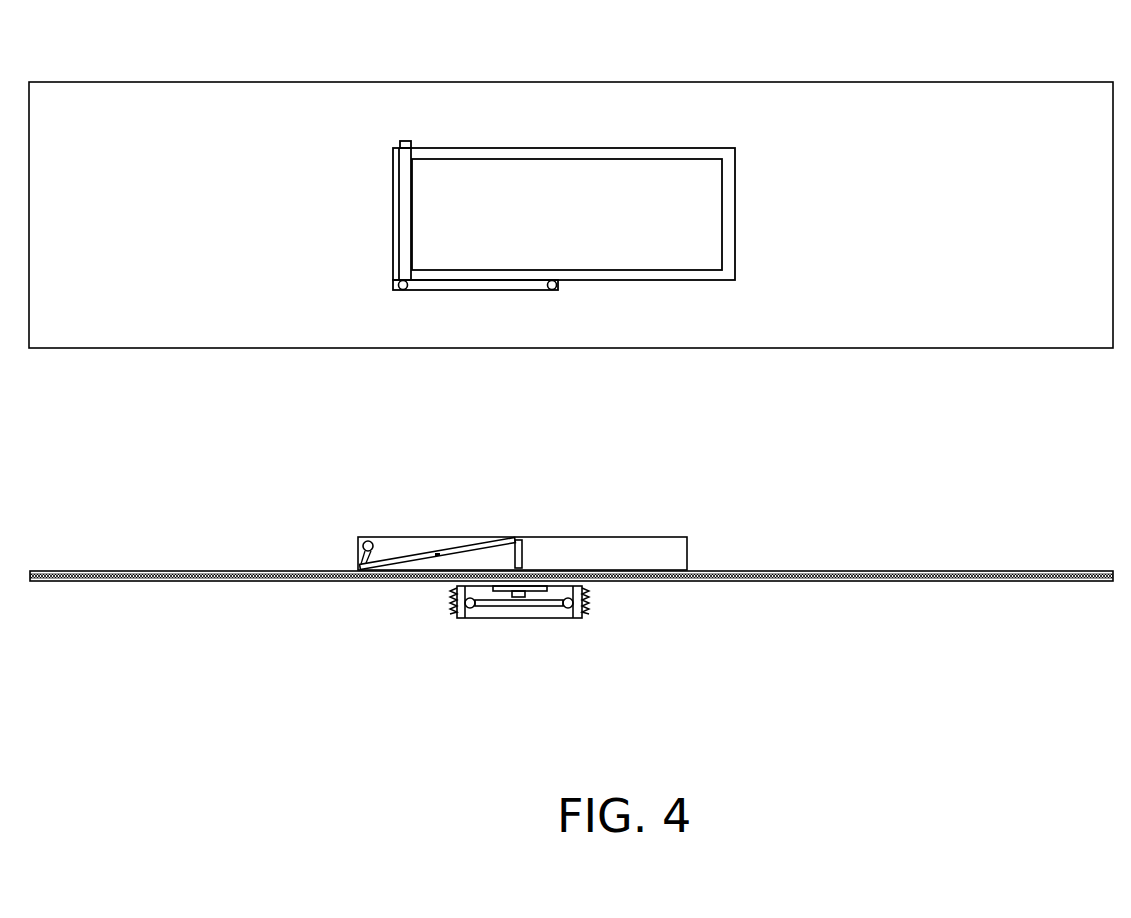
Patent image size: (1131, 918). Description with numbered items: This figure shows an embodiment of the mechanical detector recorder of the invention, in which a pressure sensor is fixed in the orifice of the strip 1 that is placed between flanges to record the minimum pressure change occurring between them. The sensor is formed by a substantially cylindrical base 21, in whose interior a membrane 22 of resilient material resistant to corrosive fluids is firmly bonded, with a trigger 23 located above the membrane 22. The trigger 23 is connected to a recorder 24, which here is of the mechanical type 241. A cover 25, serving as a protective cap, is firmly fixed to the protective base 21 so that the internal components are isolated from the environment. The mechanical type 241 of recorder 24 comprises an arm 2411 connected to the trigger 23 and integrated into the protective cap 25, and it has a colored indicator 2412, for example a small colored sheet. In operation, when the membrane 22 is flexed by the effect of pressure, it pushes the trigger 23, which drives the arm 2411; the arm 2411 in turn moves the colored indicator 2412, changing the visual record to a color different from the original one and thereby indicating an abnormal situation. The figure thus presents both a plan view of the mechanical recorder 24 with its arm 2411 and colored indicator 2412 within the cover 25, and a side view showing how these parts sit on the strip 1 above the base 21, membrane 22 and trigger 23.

The strip 1 is at (243, 128).
The mechanical type recorder 241 is at (509, 145).
The colored indicator 2412 is at (650, 182).
The arm 2411 is at (478, 294).
The cover 25 is at (590, 271).
The recorder 24 is at (733, 515).
The base 21 is at (447, 612).
The membrane 22 is at (522, 606).
The trigger 23 is at (550, 585).